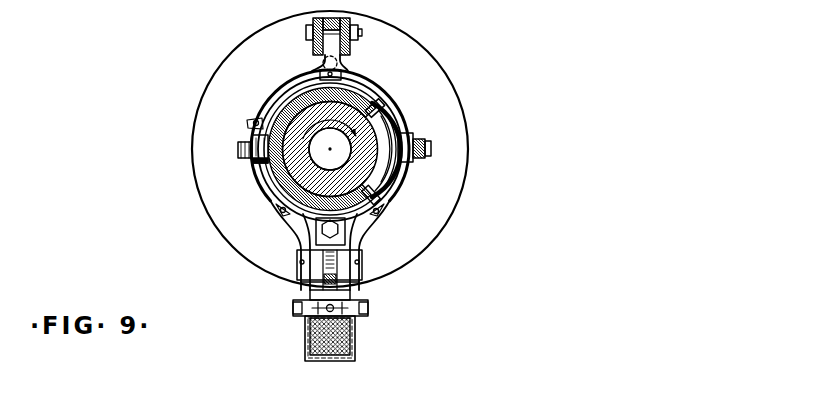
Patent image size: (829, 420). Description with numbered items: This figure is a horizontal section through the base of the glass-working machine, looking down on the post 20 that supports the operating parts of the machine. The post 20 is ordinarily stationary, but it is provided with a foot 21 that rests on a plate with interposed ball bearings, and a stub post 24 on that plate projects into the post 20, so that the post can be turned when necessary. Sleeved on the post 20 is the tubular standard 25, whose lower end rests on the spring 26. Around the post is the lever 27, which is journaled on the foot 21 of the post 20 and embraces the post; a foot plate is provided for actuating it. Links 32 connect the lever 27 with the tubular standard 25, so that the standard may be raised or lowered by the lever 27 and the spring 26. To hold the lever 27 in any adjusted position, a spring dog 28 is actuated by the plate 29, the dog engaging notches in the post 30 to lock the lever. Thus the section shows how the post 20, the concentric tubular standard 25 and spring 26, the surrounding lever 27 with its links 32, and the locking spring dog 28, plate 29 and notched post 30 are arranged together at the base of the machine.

The post 20 is at (302, 117).
The foot 21 is at (454, 112).
The stub post 24 is at (387, 130).
The tubular standard 25 is at (283, 172).
The spring 26 is at (400, 121).
The lever 27 is at (297, 228).
The spring dog 28 is at (337, 280).
The plate 29 is at (344, 337).
The post 30 is at (334, 257).
The links 32 is at (250, 150).